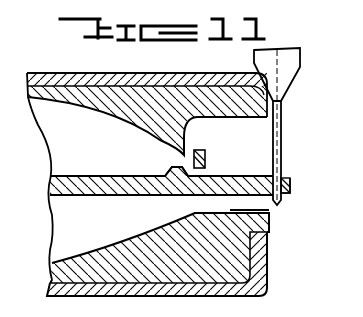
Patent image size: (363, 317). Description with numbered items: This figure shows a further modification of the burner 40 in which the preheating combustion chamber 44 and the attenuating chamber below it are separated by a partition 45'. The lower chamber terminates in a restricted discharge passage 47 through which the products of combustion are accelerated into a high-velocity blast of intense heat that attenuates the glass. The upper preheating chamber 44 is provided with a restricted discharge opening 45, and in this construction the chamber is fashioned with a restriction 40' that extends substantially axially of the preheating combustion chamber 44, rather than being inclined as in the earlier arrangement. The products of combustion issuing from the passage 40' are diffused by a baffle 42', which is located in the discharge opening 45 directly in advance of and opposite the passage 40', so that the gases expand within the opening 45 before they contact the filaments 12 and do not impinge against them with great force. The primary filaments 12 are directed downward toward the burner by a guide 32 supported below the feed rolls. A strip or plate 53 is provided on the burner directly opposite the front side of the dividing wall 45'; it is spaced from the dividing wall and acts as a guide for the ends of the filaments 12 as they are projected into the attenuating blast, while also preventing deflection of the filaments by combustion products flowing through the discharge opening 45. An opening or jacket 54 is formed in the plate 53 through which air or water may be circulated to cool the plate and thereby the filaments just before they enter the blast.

The burner 40 is at (148, 175).
The restriction 40' is at (158, 164).
The baffle 42' is at (219, 154).
The combustion chamber 44 is at (63, 132).
The discharge opening 45 is at (263, 146).
The partition 45' is at (146, 183).
The filaments 12 is at (282, 123).
The guide 32 is at (296, 85).
The plate 53 is at (286, 178).
The jacket 54 is at (291, 190).
The discharge passage 47 is at (260, 207).